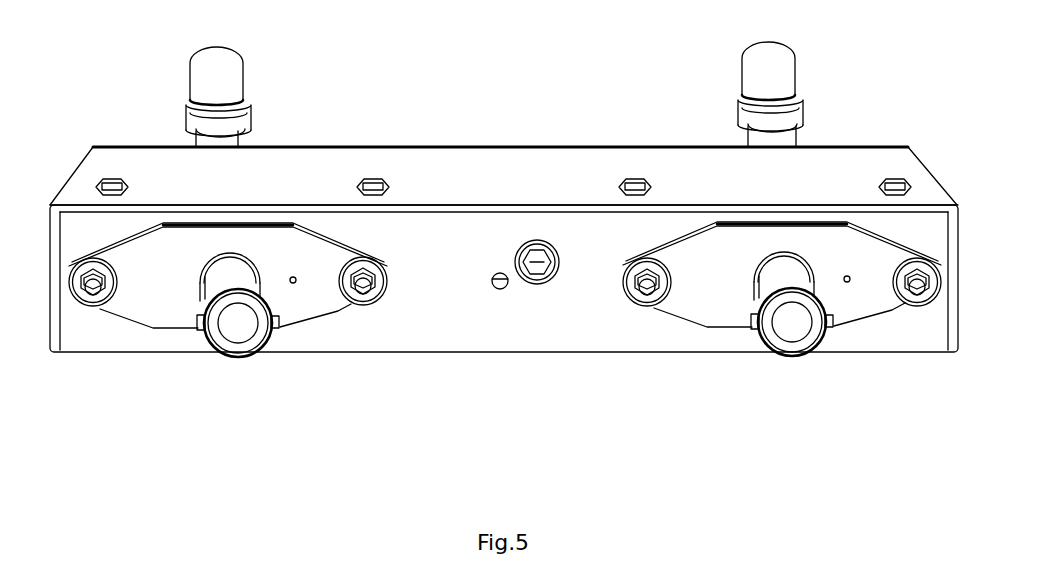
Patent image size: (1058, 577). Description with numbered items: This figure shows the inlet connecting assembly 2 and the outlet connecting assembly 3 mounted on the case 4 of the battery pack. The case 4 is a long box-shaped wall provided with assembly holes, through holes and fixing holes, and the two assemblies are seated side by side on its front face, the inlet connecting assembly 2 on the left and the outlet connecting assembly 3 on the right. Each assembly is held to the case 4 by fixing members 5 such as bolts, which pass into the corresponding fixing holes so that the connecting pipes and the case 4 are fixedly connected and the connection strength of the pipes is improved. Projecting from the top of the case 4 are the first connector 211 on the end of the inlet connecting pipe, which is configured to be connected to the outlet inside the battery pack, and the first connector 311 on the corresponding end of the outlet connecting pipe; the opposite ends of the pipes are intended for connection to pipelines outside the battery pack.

The inlet connecting assembly 2 is at (155, 394).
The outlet connecting assembly 3 is at (755, 375).
The case of the battery pack 4 is at (540, 330).
The fastening bolt 5 is at (95, 300).
The first connector 211 is at (216, 72).
The first connector 311 is at (765, 72).